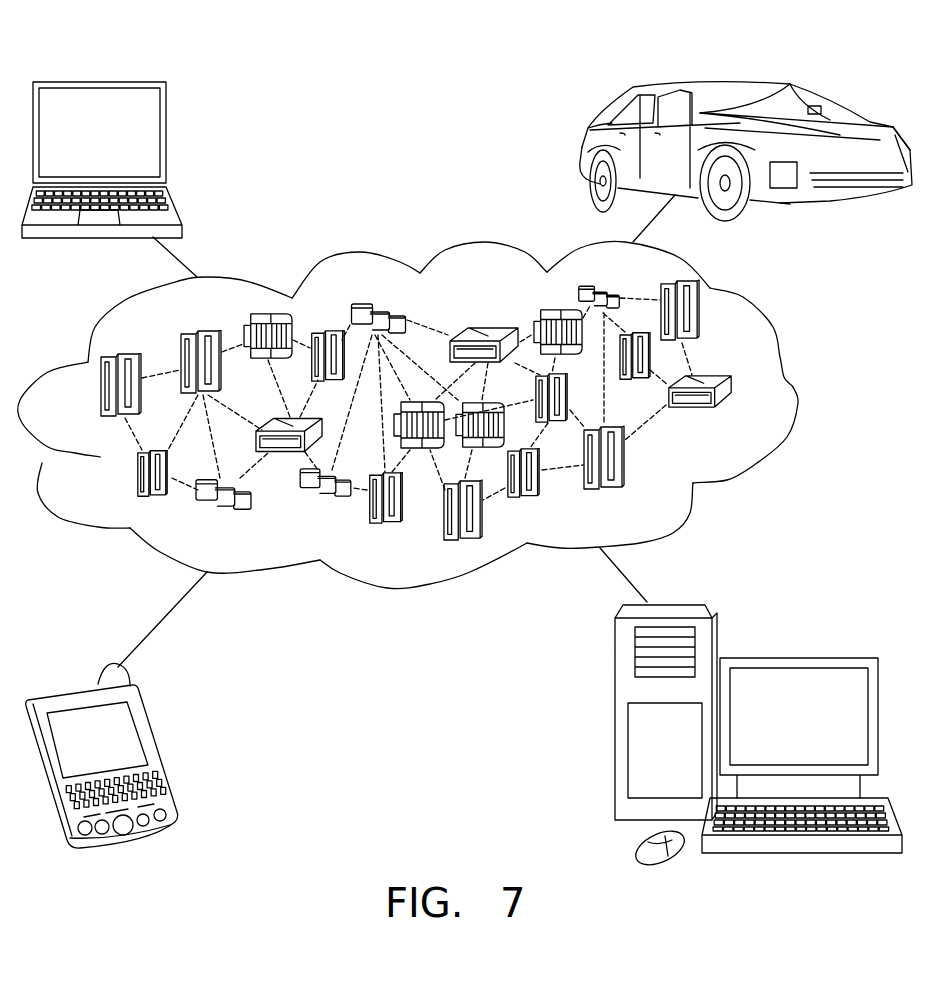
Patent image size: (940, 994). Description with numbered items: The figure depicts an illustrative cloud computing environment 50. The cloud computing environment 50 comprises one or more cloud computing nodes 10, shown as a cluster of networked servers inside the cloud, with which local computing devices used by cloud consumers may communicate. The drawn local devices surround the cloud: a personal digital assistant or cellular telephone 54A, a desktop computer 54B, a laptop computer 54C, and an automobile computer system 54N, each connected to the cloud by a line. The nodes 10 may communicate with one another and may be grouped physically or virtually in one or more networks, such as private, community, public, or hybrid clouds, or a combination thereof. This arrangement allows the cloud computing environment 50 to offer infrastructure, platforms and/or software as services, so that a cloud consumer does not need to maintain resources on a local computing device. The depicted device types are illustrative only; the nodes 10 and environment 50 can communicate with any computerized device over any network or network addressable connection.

The laptop computer 54C is at (167, 140).
The automobile computer system 54N is at (583, 150).
The cloud computing environment 50 is at (797, 387).
The cloud computing node 10 is at (741, 416).
The personal digital assistant or cellular telephone 54A is at (158, 752).
The desktop computer 54B is at (797, 655).